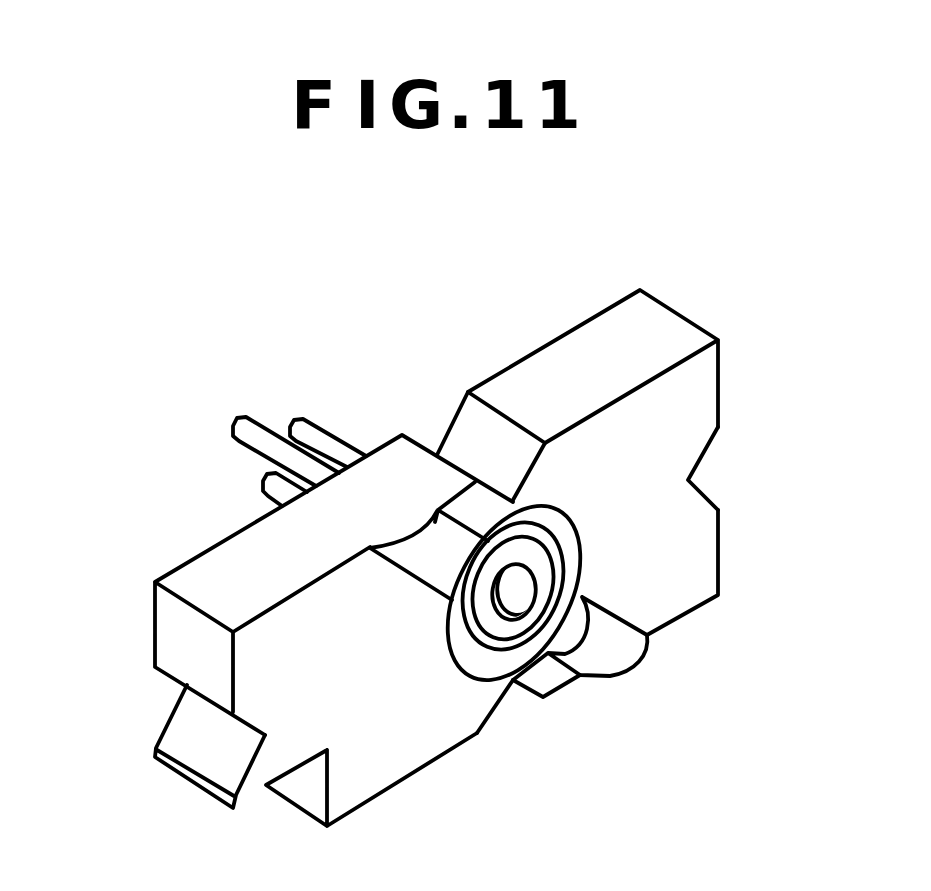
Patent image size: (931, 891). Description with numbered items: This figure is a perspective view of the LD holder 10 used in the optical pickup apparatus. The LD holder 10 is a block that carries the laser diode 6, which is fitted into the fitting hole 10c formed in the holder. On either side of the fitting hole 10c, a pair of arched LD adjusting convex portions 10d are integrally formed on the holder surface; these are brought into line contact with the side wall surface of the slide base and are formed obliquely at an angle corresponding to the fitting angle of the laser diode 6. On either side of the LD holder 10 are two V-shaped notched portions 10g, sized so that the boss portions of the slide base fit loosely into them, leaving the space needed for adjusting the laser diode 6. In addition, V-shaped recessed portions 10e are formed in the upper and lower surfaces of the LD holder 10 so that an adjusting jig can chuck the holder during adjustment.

The LD holder 10 is at (436, 512).
The fitting hole 10c is at (513, 473).
The LD adjusting convex portion 10d is at (504, 595).
The V-shaped recessed portion 10e is at (491, 547).
The V-shaped notched portion 10g is at (439, 617).
The laser diode 6 is at (552, 663).